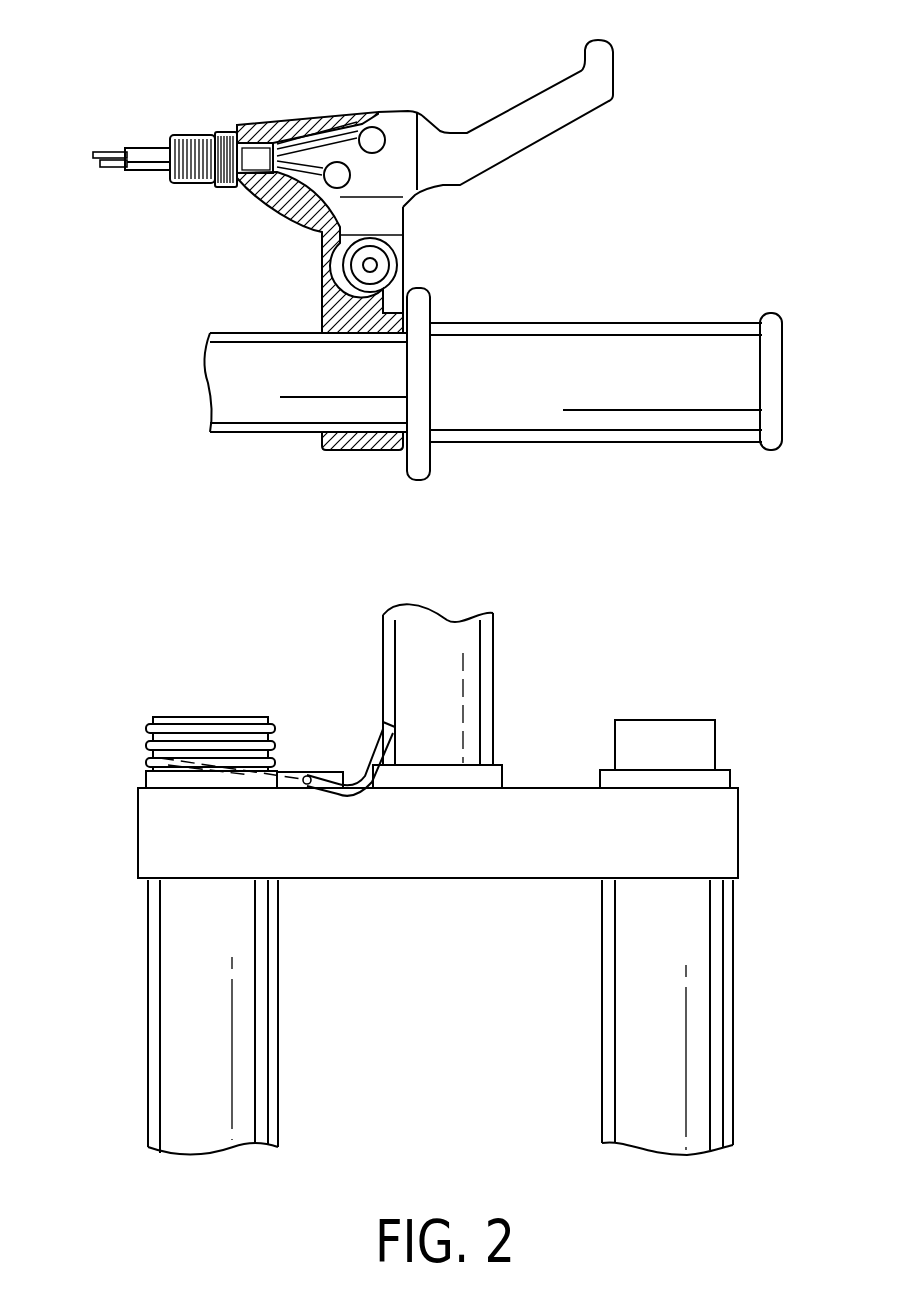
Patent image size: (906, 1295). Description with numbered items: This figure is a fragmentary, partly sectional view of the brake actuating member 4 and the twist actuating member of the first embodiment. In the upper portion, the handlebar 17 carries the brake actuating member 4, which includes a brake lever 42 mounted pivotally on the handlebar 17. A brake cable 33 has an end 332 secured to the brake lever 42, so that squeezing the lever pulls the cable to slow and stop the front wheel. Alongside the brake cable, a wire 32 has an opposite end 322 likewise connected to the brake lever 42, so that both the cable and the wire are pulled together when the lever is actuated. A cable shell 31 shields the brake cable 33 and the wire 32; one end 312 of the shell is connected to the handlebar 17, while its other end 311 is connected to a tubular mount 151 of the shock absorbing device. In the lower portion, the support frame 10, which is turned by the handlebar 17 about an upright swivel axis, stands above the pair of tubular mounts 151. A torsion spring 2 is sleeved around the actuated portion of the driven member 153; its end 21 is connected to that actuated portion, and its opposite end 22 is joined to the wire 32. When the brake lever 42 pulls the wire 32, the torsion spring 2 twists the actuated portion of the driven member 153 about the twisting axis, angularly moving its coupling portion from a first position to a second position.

The torsion spring 2 is at (186, 712).
The brake actuating member 4 is at (255, 112).
The support frame 10 is at (505, 628).
The handlebar 17 is at (583, 323).
The end of torsion spring 21 is at (276, 721).
The opposite end of torsion spring 22 is at (296, 792).
The cable shell 31 is at (140, 170).
The wire 32 is at (100, 152).
The brake cable 33 is at (112, 167).
The brake lever 42 is at (538, 120).
The tubular mount 151 is at (177, 1033).
The driven member 153 is at (242, 717).
The end of cable shell 311 is at (312, 790).
The end of cable shell 312 is at (148, 148).
The opposite end of wire 322 is at (350, 111).
The end of brake cable 332 is at (293, 217).